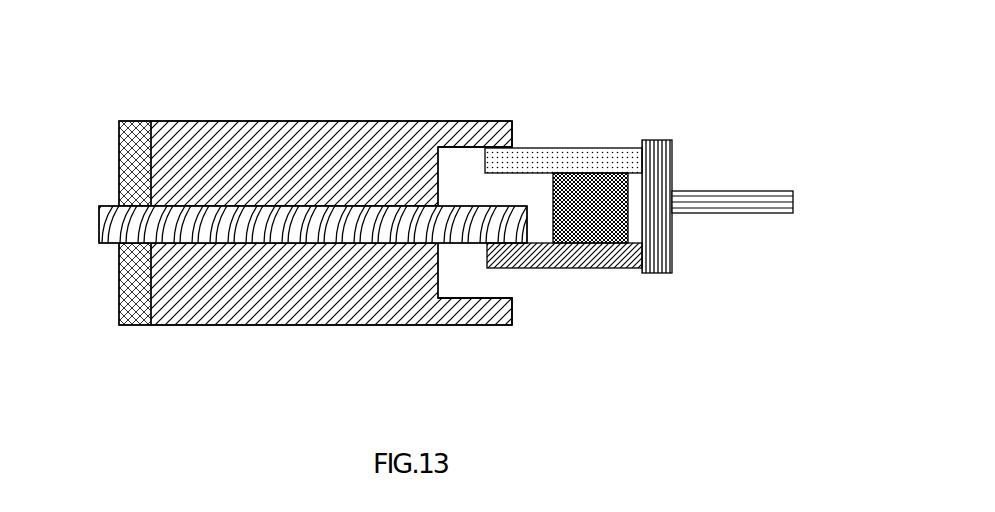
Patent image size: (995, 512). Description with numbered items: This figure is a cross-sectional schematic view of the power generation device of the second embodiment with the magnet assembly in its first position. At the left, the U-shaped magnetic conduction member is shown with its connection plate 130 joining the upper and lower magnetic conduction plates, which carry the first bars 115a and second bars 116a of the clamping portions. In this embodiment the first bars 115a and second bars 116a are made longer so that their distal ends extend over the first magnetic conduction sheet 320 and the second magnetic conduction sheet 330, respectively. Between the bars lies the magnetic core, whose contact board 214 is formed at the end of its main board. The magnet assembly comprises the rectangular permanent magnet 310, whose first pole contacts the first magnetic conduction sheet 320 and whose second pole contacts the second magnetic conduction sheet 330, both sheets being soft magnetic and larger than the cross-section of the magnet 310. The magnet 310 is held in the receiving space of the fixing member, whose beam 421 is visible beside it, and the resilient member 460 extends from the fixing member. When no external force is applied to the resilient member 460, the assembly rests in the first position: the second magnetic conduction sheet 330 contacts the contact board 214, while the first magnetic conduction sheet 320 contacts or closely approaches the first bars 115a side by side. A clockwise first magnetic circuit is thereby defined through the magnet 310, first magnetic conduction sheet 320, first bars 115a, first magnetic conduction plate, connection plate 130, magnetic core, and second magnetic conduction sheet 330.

The connection plate 130 is at (120, 283).
The first bars 115a is at (513, 120).
The second bars 116a is at (512, 325).
The contact board 214 is at (528, 222).
The first magnetic conduction sheet 320 is at (583, 147).
The second magnetic conduction sheet 330 is at (592, 252).
The magnet 310 is at (600, 222).
The beam 421 is at (672, 148).
The resilient member 460 is at (732, 190).